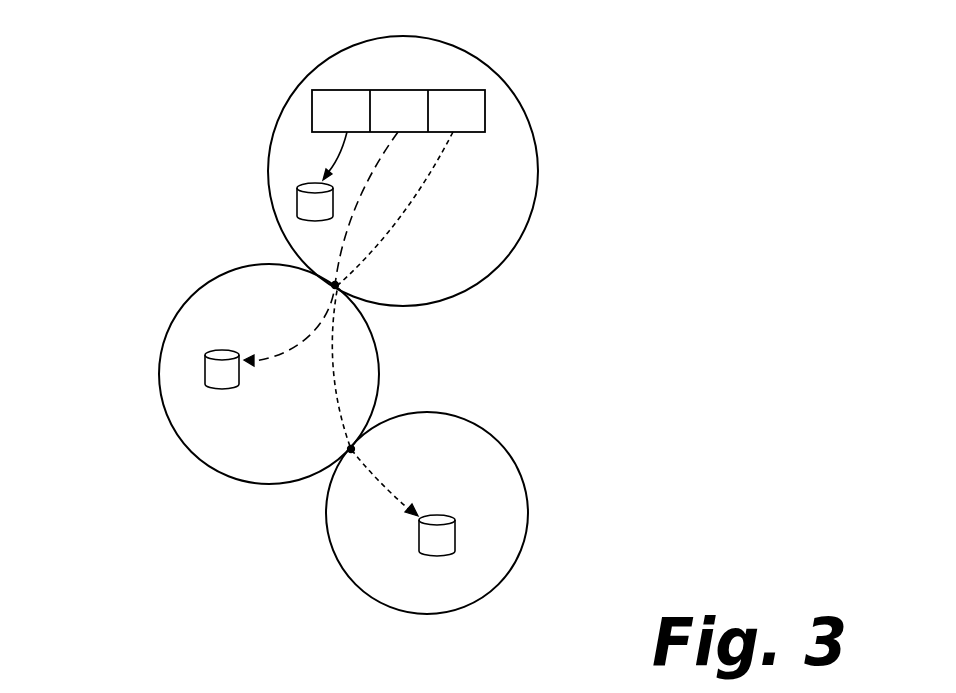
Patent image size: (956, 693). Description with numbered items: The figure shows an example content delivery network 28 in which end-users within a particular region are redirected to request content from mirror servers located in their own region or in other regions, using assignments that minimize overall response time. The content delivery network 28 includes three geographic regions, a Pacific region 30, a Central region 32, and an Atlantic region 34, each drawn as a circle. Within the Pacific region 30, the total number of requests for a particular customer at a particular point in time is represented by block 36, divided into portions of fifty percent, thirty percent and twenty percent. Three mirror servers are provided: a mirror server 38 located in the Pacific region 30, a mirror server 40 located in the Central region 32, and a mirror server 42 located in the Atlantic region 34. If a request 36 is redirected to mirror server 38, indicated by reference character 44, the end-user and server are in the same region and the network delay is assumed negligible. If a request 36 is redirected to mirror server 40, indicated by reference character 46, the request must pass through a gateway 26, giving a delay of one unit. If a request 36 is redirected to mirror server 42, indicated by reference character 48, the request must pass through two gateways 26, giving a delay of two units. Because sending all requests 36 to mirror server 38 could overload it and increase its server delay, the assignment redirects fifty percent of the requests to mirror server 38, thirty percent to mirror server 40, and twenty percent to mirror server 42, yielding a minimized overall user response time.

The gateway 26 is at (340, 364).
The content delivery network 28 is at (222, 507).
The Pacific region 30 is at (446, 171).
The Central region 32 is at (217, 374).
The Atlantic region 34 is at (487, 513).
The requests 36 is at (398, 97).
The mirror server 38 is at (315, 202).
The mirror server 40 is at (222, 369).
The mirror server 42 is at (437, 535).
The redirection to mirror server 38 44 is at (326, 156).
The redirection to mirror server 40 46 is at (321, 249).
The redirection to mirror server 42 48 is at (392, 324).